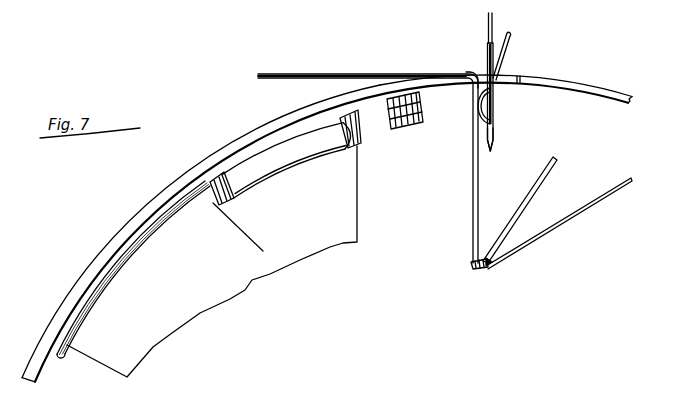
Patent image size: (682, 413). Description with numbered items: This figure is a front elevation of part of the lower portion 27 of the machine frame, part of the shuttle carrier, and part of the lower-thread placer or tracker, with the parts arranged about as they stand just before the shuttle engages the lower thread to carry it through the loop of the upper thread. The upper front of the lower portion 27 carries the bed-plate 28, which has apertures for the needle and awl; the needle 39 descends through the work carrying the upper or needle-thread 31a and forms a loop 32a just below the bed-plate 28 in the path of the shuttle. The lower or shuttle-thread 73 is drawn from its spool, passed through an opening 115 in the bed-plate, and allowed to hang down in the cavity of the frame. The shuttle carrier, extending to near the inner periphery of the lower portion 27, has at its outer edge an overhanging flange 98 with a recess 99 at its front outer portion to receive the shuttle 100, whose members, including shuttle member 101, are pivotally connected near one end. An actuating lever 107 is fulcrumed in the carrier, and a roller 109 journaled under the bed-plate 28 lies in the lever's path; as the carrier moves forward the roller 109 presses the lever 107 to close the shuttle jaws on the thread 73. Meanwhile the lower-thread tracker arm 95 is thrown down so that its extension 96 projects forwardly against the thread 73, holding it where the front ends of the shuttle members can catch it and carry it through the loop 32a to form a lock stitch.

The lower portion of the frame 27 is at (76, 283).
The bed-plate 28 is at (436, 82).
The upper or needle-thread 31a is at (507, 50).
The loop of the needle-thread 32a is at (482, 107).
The needle 39 is at (496, 136).
The lower or shuttle-thread 73 is at (344, 74).
The lower-thread tracker arm 95 is at (538, 188).
The extension of the tracker arm 96 is at (480, 266).
The overhanging flange 98 is at (97, 307).
The recess for the shuttle 99 is at (217, 205).
The shuttle 100 is at (291, 142).
The shuttle member 101 is at (322, 166).
The actuating lever 107 is at (227, 282).
The roller 109 is at (421, 114).
The opening for the lower thread 115 is at (476, 74).